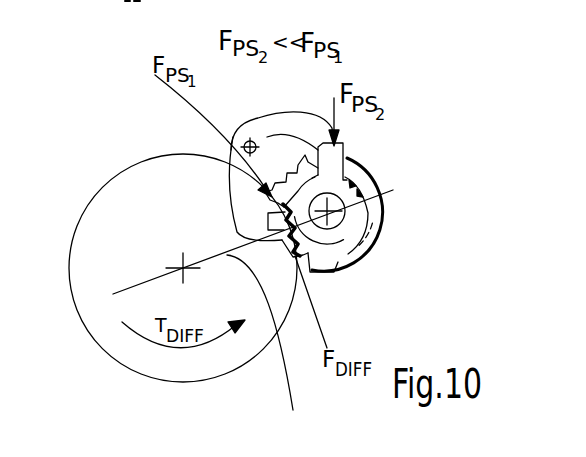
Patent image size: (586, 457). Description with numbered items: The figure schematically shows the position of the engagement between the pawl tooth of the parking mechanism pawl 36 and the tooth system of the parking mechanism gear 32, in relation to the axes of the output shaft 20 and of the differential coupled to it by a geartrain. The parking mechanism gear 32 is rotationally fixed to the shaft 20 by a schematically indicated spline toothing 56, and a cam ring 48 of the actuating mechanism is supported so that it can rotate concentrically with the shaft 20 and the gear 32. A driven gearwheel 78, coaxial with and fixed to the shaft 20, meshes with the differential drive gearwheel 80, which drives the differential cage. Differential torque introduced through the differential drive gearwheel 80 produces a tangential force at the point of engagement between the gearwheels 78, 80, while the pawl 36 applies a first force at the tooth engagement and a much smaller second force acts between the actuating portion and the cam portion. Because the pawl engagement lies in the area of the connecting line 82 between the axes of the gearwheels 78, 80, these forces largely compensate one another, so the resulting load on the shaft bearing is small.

The differential drive gearwheel 80 is at (107, 180).
The connecting line 82 is at (269, 347).
The parking mechanism pawl 36 is at (306, 116).
The parking mechanism gear 32 is at (327, 142).
The cam ring 48 is at (374, 181).
The output shaft 20 is at (344, 221).
The spline toothing 56 is at (340, 248).
The driven gearwheel 78 is at (325, 272).